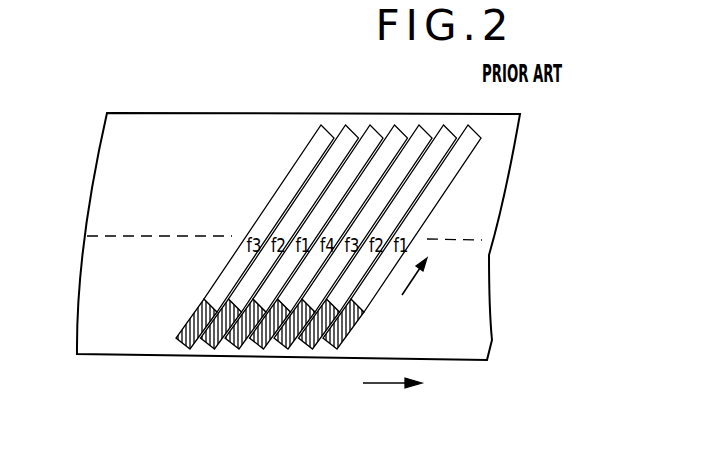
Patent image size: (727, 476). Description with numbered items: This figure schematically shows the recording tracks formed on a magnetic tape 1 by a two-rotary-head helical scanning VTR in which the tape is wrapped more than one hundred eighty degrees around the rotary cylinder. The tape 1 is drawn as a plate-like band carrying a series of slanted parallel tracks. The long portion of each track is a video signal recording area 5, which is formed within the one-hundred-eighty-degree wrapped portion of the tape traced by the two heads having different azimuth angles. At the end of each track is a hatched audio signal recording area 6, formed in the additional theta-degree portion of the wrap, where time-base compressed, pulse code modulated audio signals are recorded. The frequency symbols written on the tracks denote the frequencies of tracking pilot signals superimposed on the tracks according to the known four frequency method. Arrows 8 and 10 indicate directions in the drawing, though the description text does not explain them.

The magnetic tape 1 is at (253, 112).
The video signal recording areas 5 is at (280, 198).
The audio signal recording areas 6 is at (190, 330).
The propagation direction arrow 8 is at (412, 282).
The direction arrow 10 is at (376, 385).